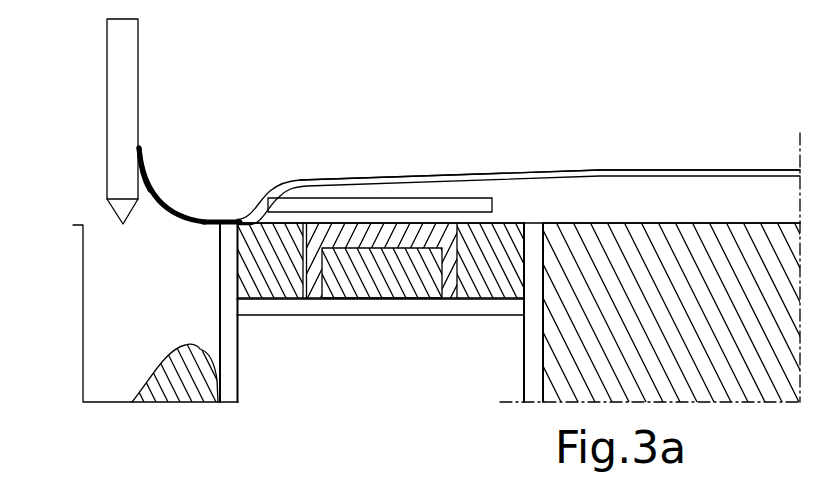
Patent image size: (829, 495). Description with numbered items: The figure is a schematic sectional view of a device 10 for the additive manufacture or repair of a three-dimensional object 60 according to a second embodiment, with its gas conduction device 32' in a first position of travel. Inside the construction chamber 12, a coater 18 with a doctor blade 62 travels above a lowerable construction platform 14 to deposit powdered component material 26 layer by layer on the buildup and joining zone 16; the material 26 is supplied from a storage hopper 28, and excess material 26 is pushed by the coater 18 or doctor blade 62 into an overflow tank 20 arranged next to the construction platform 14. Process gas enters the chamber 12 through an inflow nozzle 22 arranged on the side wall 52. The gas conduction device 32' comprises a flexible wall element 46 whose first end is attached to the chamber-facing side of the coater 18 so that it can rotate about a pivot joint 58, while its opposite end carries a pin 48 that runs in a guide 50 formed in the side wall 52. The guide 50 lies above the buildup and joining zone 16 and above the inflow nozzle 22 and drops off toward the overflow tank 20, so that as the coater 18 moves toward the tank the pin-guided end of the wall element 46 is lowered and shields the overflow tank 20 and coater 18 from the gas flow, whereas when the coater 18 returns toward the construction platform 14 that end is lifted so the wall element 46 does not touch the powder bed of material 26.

The device 10 is at (525, 106).
The construction chamber 12 is at (382, 161).
The construction platform 14 is at (435, 308).
The buildup and joining zone 16 is at (414, 220).
The coater 18 is at (136, 63).
The overflow tank 20 is at (82, 283).
The inflow nozzle 22 is at (492, 203).
The component material 26 is at (284, 277).
The storage hopper 28 is at (710, 227).
The gas conduction device 32' is at (252, 75).
The wall element 46 is at (170, 205).
The pin 48 is at (212, 219).
The guide 50 is at (585, 170).
The side wall 52 is at (400, 109).
The pivot joint 58 is at (141, 148).
The three-dimensional object 60 is at (318, 283).
The doctor blade 62 is at (115, 208).